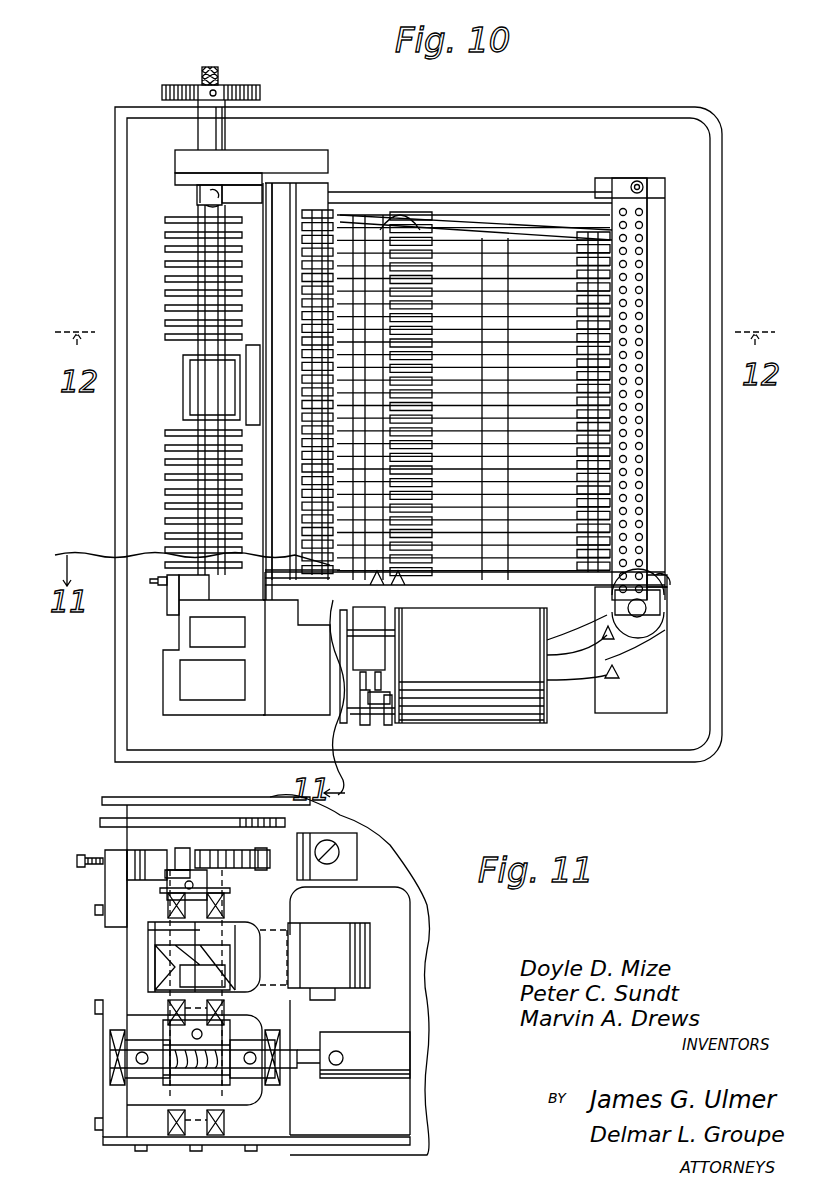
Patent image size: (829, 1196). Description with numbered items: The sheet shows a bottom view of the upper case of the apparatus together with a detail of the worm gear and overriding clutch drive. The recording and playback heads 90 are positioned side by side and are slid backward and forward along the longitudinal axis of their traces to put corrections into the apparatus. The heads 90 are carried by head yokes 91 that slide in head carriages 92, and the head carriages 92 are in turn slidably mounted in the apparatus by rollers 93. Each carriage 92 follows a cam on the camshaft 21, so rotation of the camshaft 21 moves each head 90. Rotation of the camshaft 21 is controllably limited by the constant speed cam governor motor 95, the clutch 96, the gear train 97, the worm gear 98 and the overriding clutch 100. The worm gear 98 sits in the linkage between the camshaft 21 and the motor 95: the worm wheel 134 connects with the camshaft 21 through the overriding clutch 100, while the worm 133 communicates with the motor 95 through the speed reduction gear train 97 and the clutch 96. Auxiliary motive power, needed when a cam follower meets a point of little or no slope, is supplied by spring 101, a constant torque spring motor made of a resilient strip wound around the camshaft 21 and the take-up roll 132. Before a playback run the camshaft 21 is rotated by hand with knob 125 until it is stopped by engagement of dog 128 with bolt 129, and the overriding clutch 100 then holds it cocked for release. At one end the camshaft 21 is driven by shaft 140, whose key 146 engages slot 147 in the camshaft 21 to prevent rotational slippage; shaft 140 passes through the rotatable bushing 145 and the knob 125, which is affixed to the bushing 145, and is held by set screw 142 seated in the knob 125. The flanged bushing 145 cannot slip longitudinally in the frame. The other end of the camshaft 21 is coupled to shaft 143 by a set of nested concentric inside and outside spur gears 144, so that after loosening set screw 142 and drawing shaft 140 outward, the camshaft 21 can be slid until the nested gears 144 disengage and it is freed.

In FIG. 10, the camshaft 21 is at (196, 318).
In FIG. 10, the recording and playback heads 90 is at (486, 278).
In FIG. 10, the head yokes 91 is at (509, 272).
In FIG. 10, the head carriages 92 is at (544, 269).
In FIG. 10, the rollers 93 is at (328, 288).
In FIG. 10, the constant speed cam governor motor 95 is at (480, 663).
In FIG. 10, the clutch 96 is at (375, 622).
In FIG. 10, the gear train 97 is at (375, 735).
In FIG. 11, the worm gear 98 is at (155, 1034).
In FIG. 11, the overriding clutch 100 is at (160, 980).
In FIG. 11, the spring 101 is at (150, 940).
In FIG. 10, the knob 125 is at (258, 85).
In FIG. 10, the dog 128 is at (177, 590).
In FIG. 11, the dog 128 is at (165, 862).
In FIG. 10, the bolt 129 is at (158, 582).
In FIG. 11, the bolt 129 is at (77, 858).
In FIG. 11, the take-up roll 132 is at (370, 950).
In FIG. 11, the worm 133 is at (235, 1085).
In FIG. 11, the worm wheel 134 is at (140, 1095).
In FIG. 10, the shaft 140 is at (208, 67).
In FIG. 10, the set screw 142 is at (215, 90).
In FIG. 11, the shaft 143 is at (172, 886).
In FIG. 10, the nested concentric inside and outside spur gears 144 is at (233, 597).
In FIG. 11, the nested concentric inside and outside spur gears 144 is at (240, 866).
In FIG. 10, the rotatable bushing 145 is at (178, 178).
In FIG. 10, the key 146 is at (220, 198).
In FIG. 10, the slot 147 is at (233, 190).